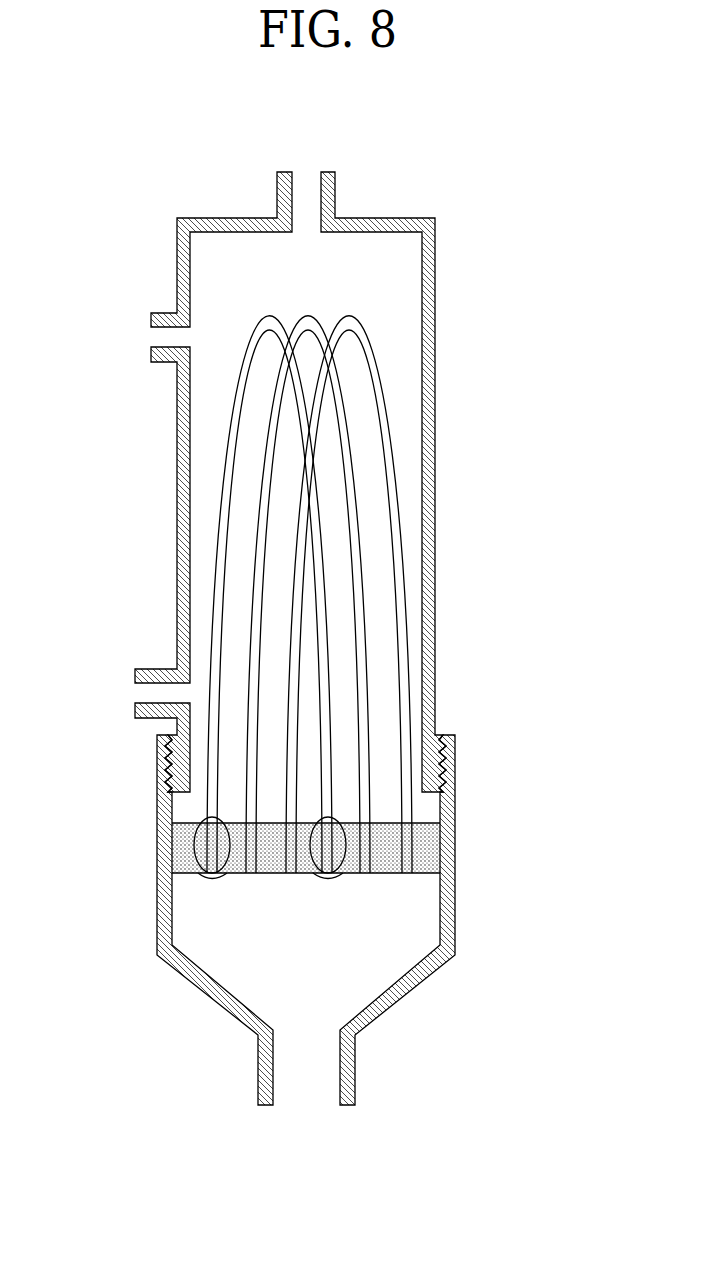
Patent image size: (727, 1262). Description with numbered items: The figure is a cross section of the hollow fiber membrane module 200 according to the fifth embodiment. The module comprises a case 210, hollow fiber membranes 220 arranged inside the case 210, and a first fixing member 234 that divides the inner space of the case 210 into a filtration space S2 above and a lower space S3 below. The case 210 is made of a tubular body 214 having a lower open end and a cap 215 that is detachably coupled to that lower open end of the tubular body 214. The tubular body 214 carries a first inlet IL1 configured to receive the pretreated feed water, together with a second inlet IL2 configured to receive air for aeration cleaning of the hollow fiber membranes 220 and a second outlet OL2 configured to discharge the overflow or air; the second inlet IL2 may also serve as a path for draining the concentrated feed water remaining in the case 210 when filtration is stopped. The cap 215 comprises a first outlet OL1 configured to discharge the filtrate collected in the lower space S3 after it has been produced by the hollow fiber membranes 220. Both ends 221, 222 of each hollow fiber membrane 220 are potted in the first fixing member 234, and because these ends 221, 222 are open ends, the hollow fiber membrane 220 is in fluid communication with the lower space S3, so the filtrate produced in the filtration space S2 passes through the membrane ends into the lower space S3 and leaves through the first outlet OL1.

The hollow fiber membrane module 200 is at (118, 130).
The case 210 is at (533, 652).
The tubular body 214 is at (436, 645).
The cap 215 is at (447, 800).
The hollow fiber membranes 220 is at (228, 447).
The end of the hollow fiber membrane 221 is at (193, 852).
The end of the hollow fiber membrane 222 is at (330, 878).
The first fixing member 234 is at (430, 838).
The first inlet IL1 is at (167, 311).
The second inlet IL2 is at (150, 668).
The first outlet OL1 is at (356, 1073).
The second outlet OL2 is at (334, 194).
The filtration space S2 is at (396, 287).
The lower space S3 is at (425, 918).